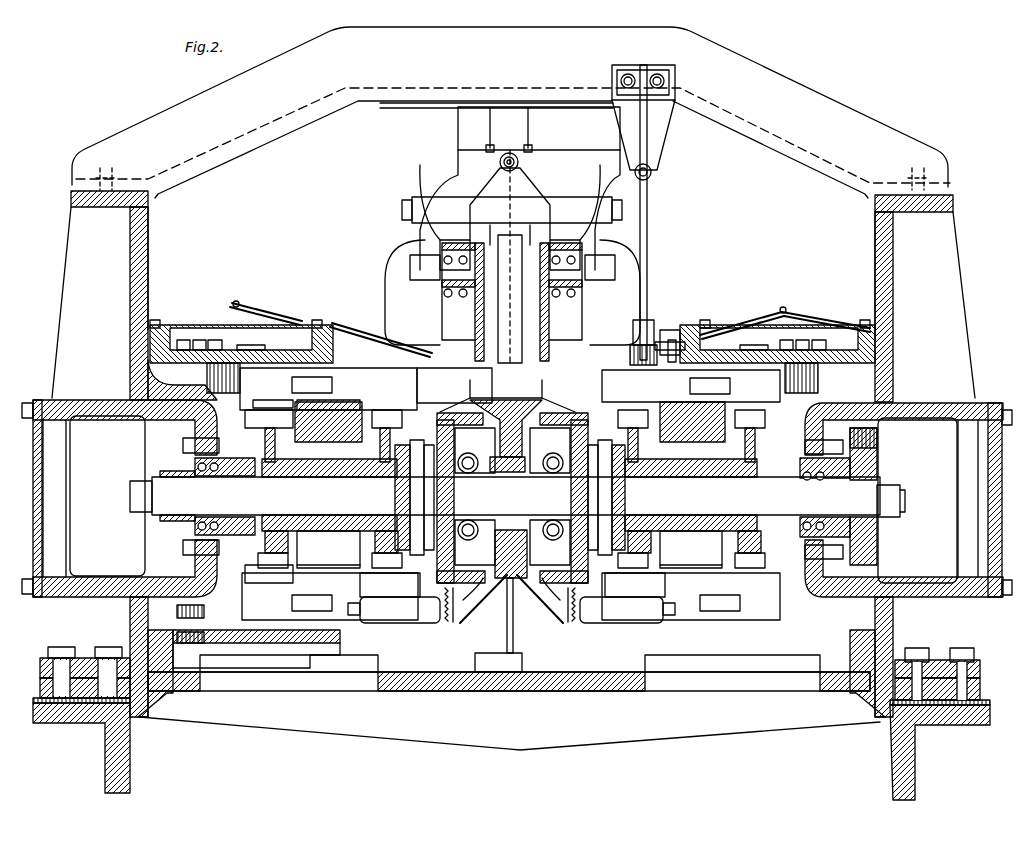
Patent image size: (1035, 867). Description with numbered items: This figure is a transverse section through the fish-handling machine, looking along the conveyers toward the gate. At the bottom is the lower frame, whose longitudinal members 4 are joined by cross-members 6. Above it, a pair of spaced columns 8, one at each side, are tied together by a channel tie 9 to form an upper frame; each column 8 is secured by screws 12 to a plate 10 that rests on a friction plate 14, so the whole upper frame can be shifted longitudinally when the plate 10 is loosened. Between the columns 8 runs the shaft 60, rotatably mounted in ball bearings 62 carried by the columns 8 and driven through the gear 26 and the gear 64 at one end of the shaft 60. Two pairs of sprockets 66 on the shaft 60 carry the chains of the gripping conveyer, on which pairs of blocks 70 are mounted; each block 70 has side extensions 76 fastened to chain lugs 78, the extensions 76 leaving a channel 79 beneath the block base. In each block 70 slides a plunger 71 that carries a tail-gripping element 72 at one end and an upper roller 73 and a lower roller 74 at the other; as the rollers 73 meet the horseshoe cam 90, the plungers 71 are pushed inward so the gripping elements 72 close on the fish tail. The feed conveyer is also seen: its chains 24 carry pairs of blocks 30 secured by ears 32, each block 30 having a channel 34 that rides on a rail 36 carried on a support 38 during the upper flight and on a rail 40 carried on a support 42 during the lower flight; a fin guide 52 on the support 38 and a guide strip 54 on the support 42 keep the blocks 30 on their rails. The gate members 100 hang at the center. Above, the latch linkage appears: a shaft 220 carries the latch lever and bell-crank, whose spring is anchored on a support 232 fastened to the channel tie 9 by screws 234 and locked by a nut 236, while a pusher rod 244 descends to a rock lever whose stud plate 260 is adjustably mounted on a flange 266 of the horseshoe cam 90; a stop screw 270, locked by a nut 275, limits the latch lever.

The longitudinal member 4 is at (78, 722).
The cross-member 6 is at (728, 724).
The column 8 is at (145, 238).
The channel tie 9 is at (192, 100).
The plate 10 is at (980, 687).
The screws 12 is at (980, 668).
The friction plate 14 is at (990, 705).
The chains 24 is at (568, 430).
The gear 26 is at (868, 443).
The block 30 is at (548, 408).
The ears 32 is at (440, 438).
The channel 34 is at (507, 593).
The rail 36 is at (610, 395).
The support 38 is at (600, 432).
The rail 40 is at (480, 610).
The support 42 is at (437, 565).
The fin guide 52 is at (492, 472).
The guide strip 54 is at (515, 600).
The shaft 60 is at (318, 478).
The ball bearings 62 is at (805, 545).
The gear 64 is at (878, 535).
The sprockets 66 is at (333, 525).
The block 70 is at (238, 590).
The plunger 71 is at (511, 495).
The tail-gripping element 72 is at (443, 620).
The upper roller 73 is at (200, 645).
The lower roller 74 is at (178, 619).
The extension 76 is at (246, 407).
The lugs 78 is at (258, 420).
The channel or passage 79 is at (308, 410).
The horseshoe cam 90 is at (330, 325).
The gate member 100 is at (500, 345).
The shaft 220 is at (458, 128).
The support 232 is at (668, 128).
The screws 234 is at (657, 74).
The nut 236 is at (651, 176).
The pusher rod 244 is at (648, 245).
The plate 260 is at (678, 330).
The flange 266 is at (700, 305).
The stop screw 270 is at (518, 162).
The nut 275 is at (500, 162).